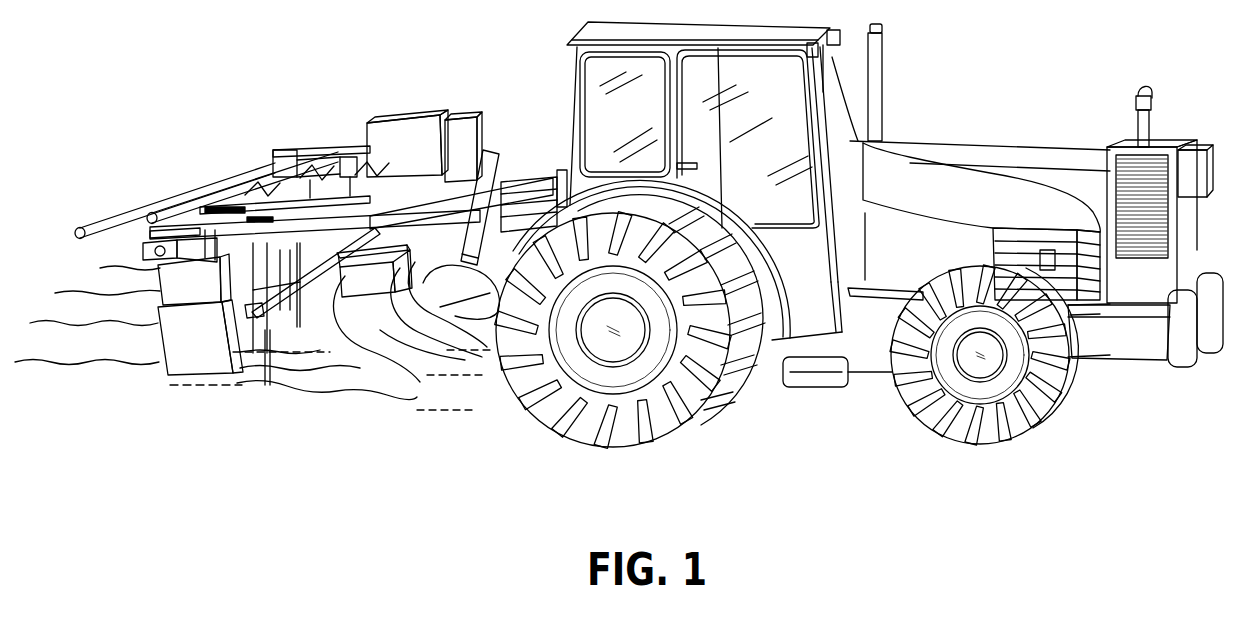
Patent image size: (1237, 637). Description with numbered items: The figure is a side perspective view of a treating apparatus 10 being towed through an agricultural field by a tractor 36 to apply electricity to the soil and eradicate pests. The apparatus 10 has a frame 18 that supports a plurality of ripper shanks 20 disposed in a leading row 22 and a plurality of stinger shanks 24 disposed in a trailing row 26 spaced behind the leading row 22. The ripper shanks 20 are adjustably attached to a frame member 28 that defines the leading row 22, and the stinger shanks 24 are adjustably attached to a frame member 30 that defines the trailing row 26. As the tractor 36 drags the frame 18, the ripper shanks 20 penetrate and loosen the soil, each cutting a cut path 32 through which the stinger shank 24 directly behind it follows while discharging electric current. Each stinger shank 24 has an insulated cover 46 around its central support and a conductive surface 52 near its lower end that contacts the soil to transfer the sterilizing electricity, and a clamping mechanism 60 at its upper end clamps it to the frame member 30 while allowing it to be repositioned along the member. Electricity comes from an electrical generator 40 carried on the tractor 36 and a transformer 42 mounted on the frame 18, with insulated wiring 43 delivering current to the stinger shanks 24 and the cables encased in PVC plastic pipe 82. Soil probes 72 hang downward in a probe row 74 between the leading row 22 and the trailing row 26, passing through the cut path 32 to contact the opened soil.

The treating apparatus 10 is at (340, 110).
The frame 18 is at (436, 208).
The ripper shanks 20 is at (378, 375).
The leading row 22 is at (448, 440).
The stinger shanks 24 is at (218, 370).
The trailing row 26 is at (229, 360).
The frame member 28 is at (362, 297).
The frame member 30 is at (210, 210).
The cut path 32 is at (80, 350).
The tractor 36 is at (859, 235).
The electrical generator 40 is at (1173, 143).
The transformer 42 is at (400, 130).
The insulated wiring 43 is at (157, 257).
The insulated cover 46 is at (175, 284).
The conductive surface 52 is at (175, 358).
The clamping mechanism 60 is at (217, 198).
The soil probes 72 is at (273, 370).
The probe row 74 is at (274, 440).
The PVC plastic pipe 82 is at (313, 150).